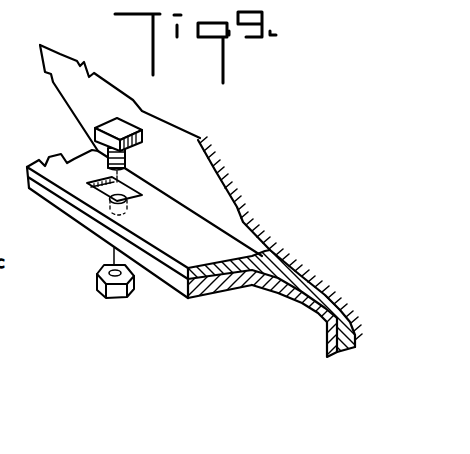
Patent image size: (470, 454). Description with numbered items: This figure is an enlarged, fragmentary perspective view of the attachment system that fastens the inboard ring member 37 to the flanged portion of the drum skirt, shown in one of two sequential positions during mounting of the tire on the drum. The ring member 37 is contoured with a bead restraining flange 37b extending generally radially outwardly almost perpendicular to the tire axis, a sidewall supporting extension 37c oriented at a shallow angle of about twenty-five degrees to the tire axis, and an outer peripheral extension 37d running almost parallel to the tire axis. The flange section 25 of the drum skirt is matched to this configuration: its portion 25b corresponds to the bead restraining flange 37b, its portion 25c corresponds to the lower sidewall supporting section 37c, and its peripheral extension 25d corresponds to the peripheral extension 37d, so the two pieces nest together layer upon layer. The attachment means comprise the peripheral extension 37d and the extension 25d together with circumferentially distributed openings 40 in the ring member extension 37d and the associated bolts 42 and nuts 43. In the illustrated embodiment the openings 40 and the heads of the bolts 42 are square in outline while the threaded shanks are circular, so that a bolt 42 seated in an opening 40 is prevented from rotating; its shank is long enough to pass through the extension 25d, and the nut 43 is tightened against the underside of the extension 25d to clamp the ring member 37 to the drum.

The flange section 25 is at (316, 327).
The portion corresponding to the bead restraining flange section 25b is at (325, 341).
The portion corresponding to the lower sidewall supporting section 25c is at (291, 301).
The peripheral extension 25d is at (205, 299).
The ring member 37 is at (42, 166).
The bead restraining flange 37b is at (350, 352).
The sidewall supporting extension 37c is at (314, 276).
The outer peripheral extension 37d is at (68, 181).
The openings 40 is at (128, 194).
The bolts 42 is at (139, 134).
The nuts 43 is at (96, 286).